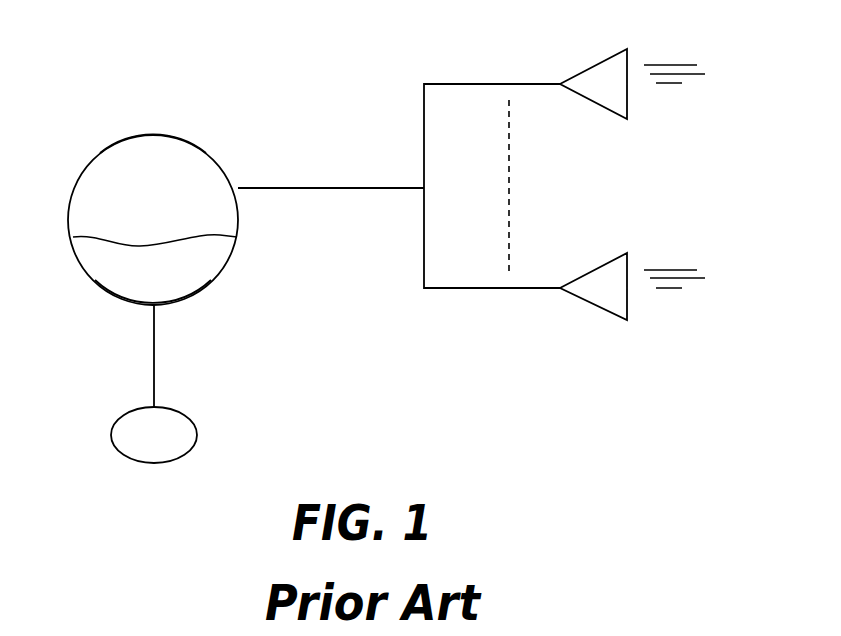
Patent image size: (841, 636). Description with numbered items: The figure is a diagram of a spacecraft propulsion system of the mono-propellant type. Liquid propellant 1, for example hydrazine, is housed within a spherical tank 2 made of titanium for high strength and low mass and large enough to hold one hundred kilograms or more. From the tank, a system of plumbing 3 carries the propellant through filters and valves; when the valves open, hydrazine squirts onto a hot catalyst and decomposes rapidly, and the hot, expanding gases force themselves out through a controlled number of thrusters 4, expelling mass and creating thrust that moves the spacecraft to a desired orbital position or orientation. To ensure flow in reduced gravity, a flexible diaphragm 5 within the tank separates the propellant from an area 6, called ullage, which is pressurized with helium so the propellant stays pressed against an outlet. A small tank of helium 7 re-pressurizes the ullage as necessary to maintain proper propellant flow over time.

The liquid propellant 1 is at (103, 188).
The spherical tank 2 is at (190, 142).
The system of plumbing 3 is at (424, 127).
The thrusters 4 is at (593, 65).
The flexible diaphragm 5 is at (98, 238).
The area 6 is at (202, 278).
The tank of helium 7 is at (197, 433).